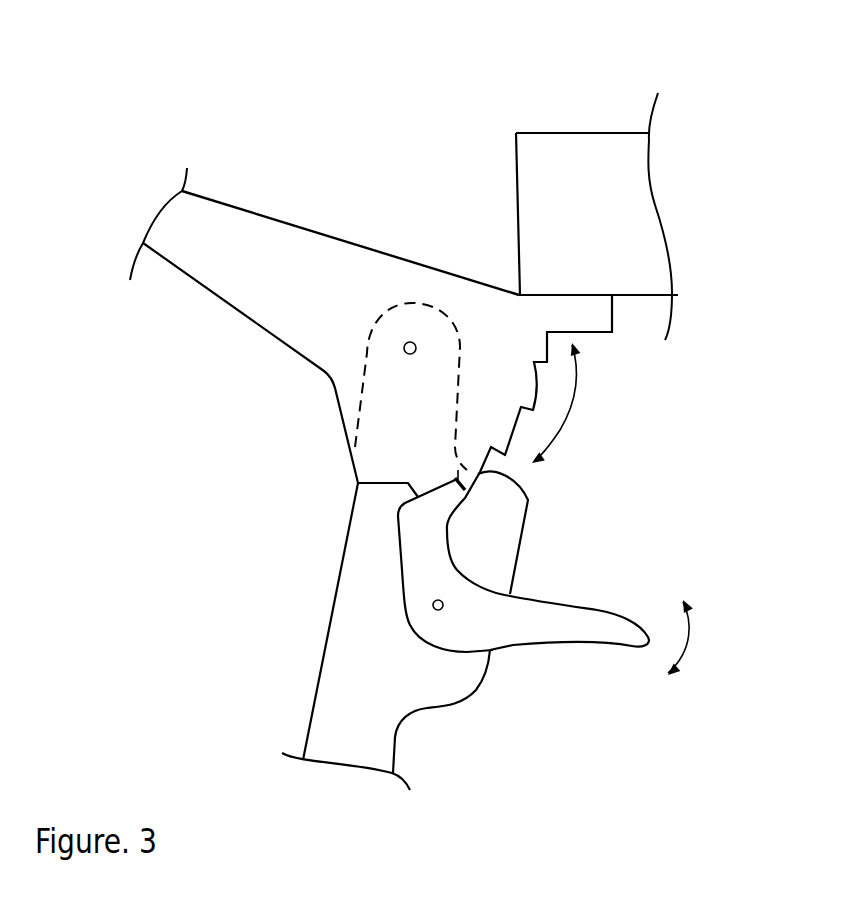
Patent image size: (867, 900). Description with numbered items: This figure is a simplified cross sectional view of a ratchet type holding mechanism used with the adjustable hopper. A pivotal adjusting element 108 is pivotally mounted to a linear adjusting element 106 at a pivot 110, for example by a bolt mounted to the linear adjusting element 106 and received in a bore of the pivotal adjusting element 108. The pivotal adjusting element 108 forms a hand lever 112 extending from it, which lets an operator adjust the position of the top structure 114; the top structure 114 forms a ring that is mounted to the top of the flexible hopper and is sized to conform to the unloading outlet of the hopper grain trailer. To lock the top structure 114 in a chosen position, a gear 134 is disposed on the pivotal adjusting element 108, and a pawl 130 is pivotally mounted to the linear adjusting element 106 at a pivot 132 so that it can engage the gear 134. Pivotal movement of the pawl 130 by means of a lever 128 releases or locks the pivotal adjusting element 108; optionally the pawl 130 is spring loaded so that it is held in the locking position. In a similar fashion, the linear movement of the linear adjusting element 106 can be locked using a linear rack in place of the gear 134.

The linear adjusting element 106 is at (343, 623).
The pivotal adjusting element 108 is at (477, 367).
The pivot 110 is at (405, 343).
The hand lever 112 is at (273, 242).
The top structure 114 is at (575, 205).
The lever 128 is at (545, 625).
The pawl 130 is at (435, 511).
The pivot 132 is at (443, 609).
The gear 134 is at (515, 428).